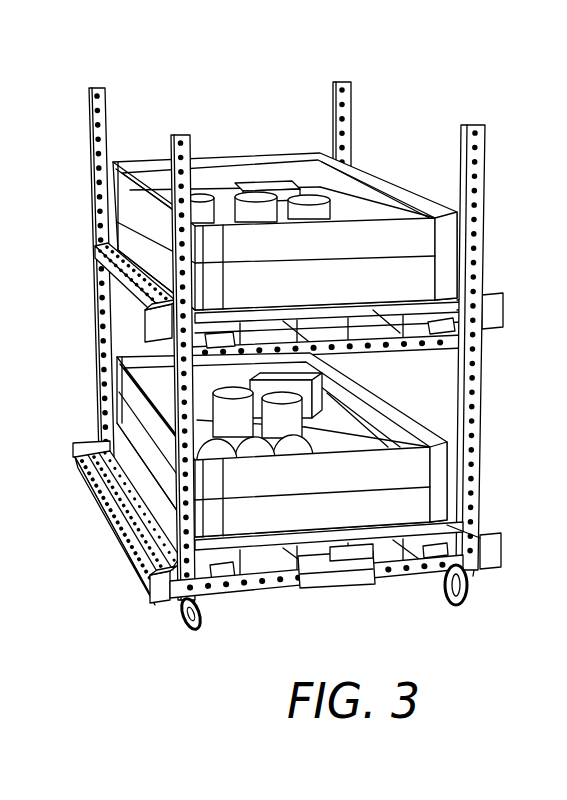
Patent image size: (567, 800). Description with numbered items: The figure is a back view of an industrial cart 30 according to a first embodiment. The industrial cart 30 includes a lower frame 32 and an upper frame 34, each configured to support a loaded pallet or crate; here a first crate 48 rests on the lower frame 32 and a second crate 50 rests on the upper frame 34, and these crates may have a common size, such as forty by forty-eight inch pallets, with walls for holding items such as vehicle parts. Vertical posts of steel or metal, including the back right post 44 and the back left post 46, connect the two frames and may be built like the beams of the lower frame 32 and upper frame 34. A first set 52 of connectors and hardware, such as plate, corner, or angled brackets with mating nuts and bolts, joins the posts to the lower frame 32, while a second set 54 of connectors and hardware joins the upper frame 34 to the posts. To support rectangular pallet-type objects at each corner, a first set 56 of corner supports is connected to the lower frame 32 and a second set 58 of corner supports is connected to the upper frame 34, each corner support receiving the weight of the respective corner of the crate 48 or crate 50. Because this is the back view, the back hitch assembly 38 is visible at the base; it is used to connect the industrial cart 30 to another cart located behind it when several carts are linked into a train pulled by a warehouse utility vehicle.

The industrial cart 30 is at (304, 345).
The lower frame 32 is at (406, 594).
The upper frame 34 is at (320, 365).
The back hitch assembly 38 is at (320, 582).
The back right post 44 is at (477, 345).
The back left post 46 is at (103, 523).
The first crate 48 is at (372, 485).
The second crate 50 is at (335, 253).
The first set of connectors and hardware 52 is at (168, 597).
The second set of connectors and hardware 54 is at (147, 337).
The first set of corner supports 56 is at (233, 585).
The second set of corner supports 58 is at (444, 320).